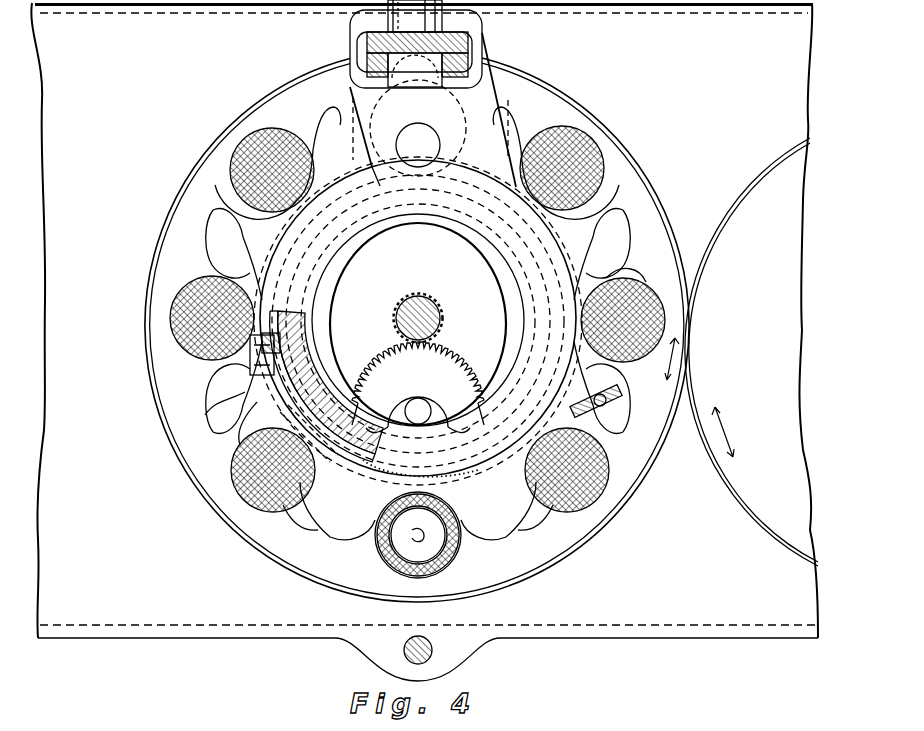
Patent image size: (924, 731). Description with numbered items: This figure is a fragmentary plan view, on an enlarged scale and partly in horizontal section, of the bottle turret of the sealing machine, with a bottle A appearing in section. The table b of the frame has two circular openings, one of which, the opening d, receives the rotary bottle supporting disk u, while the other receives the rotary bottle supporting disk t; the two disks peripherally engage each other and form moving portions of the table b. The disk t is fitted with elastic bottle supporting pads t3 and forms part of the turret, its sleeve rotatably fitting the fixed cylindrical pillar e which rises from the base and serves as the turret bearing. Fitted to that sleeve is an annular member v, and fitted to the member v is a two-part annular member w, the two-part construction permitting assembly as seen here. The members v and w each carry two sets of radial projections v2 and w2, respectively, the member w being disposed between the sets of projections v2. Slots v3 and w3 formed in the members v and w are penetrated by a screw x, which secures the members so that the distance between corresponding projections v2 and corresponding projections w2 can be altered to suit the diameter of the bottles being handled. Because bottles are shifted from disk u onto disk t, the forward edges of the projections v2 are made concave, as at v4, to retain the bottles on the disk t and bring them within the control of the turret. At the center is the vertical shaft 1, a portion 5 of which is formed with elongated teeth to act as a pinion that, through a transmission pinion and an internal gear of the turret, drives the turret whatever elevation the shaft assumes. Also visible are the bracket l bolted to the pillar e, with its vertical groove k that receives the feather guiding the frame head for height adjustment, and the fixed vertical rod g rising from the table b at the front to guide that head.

The table b is at (424, 342).
The rotary bottle supporting disk u is at (762, 520).
The circular opening d is at (742, 505).
The casing ring C is at (602, 517).
The rotary bottle supporting disk t is at (574, 545).
The fixed vertical rod g is at (433, 652).
The elastic bottle supporting pads t3 is at (265, 512).
The radial projections w2 is at (626, 228).
The fixed cylindrical pillar e is at (520, 320).
The vertical shaft 1 is at (424, 308).
The toothed portion of shaft 5 is at (441, 318).
The annular member v is at (278, 340).
The annular member w is at (272, 378).
The screw x is at (250, 372).
The slot w3 is at (245, 392).
The slot v3 is at (257, 402).
The radial projections v2 is at (640, 257).
The concave forward edge v4 is at (632, 274).
The vertical groove k is at (350, 44).
The bracket l is at (484, 43).
The bottle A is at (387, 552).